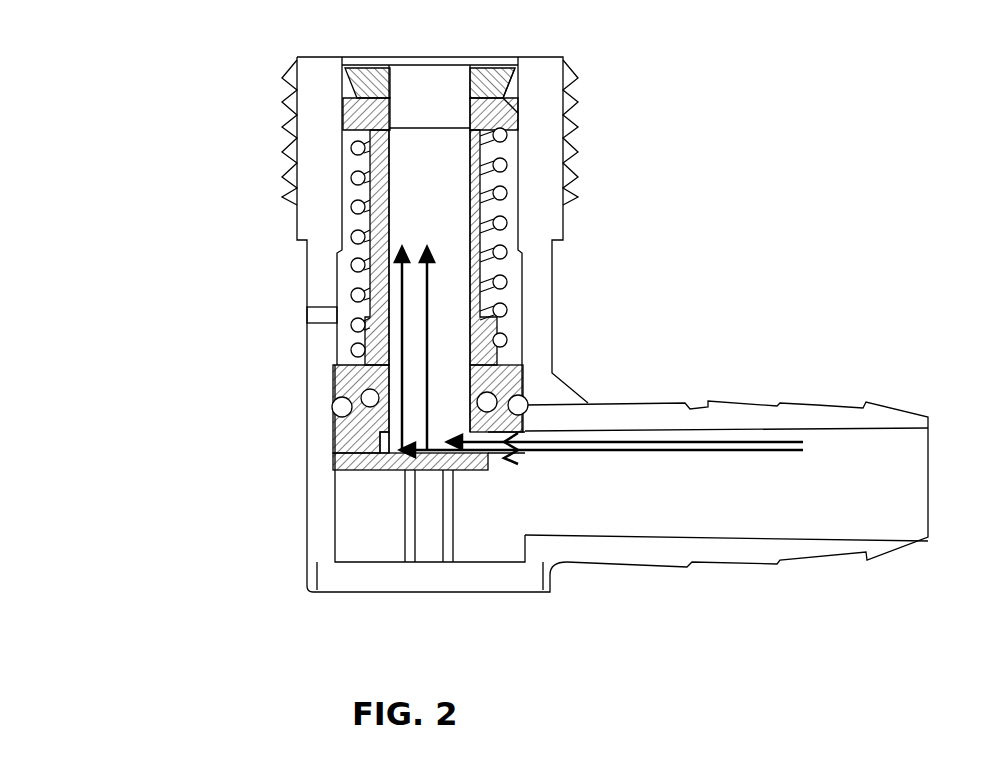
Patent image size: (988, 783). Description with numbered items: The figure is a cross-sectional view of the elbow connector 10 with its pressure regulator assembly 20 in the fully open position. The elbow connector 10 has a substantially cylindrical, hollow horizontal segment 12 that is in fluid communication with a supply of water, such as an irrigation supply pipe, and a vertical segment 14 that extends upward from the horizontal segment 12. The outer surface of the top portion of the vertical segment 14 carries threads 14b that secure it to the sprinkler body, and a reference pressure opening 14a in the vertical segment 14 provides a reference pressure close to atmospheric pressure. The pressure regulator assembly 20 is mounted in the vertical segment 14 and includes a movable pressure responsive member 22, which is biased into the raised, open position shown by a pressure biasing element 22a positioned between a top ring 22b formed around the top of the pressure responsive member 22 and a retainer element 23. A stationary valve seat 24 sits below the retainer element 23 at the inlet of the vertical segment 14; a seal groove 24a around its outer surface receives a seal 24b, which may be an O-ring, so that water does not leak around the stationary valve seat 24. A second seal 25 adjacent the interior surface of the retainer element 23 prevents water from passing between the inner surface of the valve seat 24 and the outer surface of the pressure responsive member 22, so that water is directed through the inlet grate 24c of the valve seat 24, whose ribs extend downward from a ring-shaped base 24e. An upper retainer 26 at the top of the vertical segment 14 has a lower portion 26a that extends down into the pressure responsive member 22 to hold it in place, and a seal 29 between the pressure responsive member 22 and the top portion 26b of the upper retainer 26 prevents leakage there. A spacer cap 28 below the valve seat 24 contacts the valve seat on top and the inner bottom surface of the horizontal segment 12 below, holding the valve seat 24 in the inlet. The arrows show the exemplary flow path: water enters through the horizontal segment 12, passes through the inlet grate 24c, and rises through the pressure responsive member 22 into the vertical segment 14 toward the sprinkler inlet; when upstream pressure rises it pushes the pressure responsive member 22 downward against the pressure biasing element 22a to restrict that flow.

The elbow connector 10 is at (470, 305).
The horizontal segment 12 is at (723, 413).
The vertical segment 14 is at (356, 324).
The reference pressure opening 14a is at (322, 318).
The threads 14b is at (283, 152).
The pressure regulator assembly 20 is at (408, 218).
The pressure responsive member 22 is at (490, 242).
The pressure biasing element 22a is at (507, 223).
The top ring 22b is at (517, 112).
The retainer element 23 is at (497, 360).
The stationary valve seat 24 is at (489, 403).
The seal groove 24a is at (527, 394).
The seal 24b is at (530, 407).
The inlet grate 24c is at (383, 443).
The ring-shaped base 24e is at (525, 422).
The second seal 25 is at (377, 402).
The upper retainer 26 is at (430, 74).
The lower portion 26a is at (380, 120).
The top portion 26b is at (353, 87).
The spacer cap 28 is at (417, 570).
The seal 29 is at (513, 84).